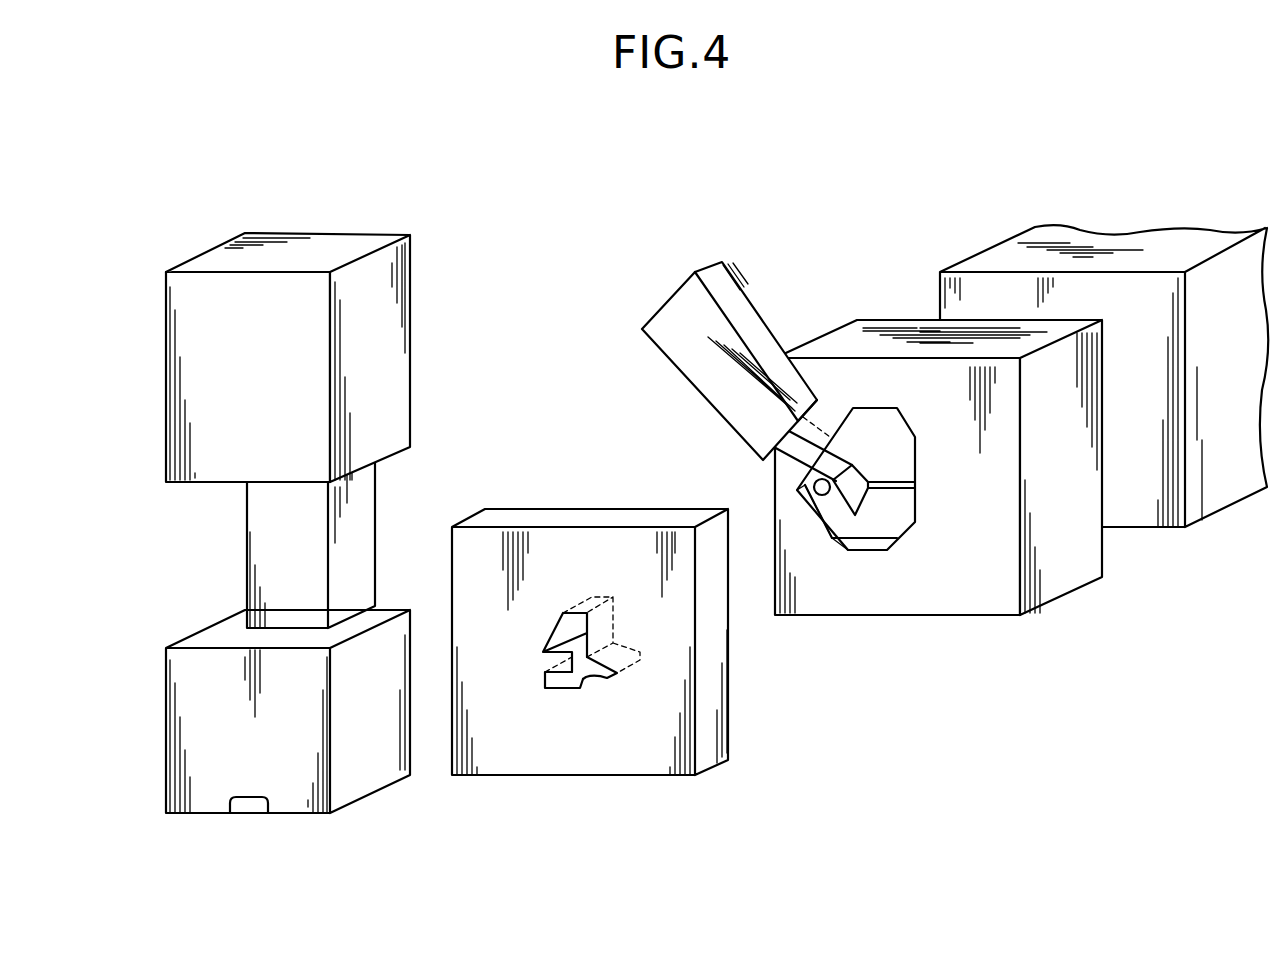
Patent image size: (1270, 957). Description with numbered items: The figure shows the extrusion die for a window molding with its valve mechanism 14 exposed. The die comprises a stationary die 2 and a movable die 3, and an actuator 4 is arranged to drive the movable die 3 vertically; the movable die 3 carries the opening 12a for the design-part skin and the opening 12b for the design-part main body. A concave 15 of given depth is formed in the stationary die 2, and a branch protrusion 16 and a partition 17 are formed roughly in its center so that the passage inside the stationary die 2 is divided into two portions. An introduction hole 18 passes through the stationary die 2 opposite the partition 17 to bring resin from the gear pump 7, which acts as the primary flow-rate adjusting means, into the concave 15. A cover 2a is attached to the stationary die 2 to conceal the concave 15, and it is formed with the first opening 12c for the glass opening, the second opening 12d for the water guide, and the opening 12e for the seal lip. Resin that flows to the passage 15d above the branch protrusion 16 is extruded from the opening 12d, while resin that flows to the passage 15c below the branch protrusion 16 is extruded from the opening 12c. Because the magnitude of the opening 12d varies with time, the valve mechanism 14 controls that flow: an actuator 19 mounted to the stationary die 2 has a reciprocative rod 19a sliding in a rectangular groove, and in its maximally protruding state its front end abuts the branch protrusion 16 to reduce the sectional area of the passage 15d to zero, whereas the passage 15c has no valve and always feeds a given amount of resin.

The stationary die 2 is at (988, 603).
The cover 2a is at (640, 762).
The movable die 3 is at (183, 733).
The actuator 4 is at (183, 347).
The gear pump 7 is at (1212, 495).
The opening 12a is at (250, 808).
The opening 12b is at (247, 846).
The first opening 12c is at (560, 690).
The second opening 12d is at (563, 625).
The opening 12e is at (607, 679).
The valve mechanism 14 is at (829, 420).
The concave 15 is at (897, 523).
The passage 15c is at (838, 512).
The passage 15d is at (836, 437).
The branch protrusion 16 is at (853, 470).
The partition 17 is at (890, 478).
The introduction hole 18 is at (806, 486).
The actuator 19 is at (673, 298).
The reciprocative rod 19a is at (802, 428).